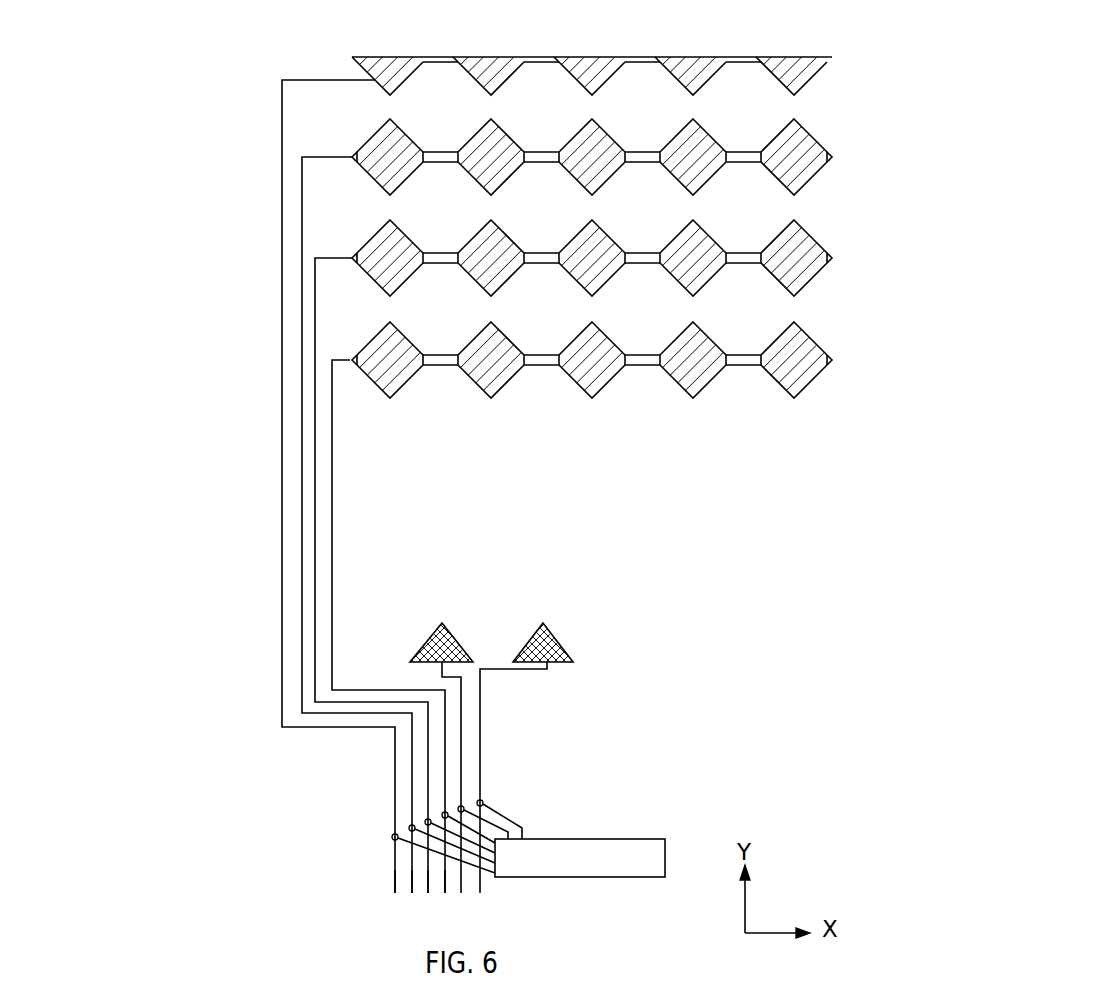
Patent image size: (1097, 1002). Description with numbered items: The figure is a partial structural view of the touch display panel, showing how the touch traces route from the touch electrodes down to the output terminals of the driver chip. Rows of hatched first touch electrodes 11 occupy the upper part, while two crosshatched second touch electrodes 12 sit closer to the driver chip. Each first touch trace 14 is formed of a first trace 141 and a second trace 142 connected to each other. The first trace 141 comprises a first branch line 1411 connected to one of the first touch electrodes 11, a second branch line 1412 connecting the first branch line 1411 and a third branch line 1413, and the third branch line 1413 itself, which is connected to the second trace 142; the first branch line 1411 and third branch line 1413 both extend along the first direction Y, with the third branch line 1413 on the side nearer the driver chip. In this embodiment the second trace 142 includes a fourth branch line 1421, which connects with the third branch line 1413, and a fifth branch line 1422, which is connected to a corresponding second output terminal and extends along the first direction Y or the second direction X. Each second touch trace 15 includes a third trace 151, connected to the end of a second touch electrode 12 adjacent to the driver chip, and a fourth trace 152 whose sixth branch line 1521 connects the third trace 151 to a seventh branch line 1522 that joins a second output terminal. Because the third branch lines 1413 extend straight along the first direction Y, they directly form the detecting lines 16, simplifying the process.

The first touch electrode 11 is at (680, 368).
The second touch electrode 12 is at (557, 640).
The first touch trace 14 is at (288, 497).
The first trace 141 is at (286, 486).
The first branch line 1411 is at (282, 690).
The second branch line 1412 is at (323, 729).
The third branch line 1413 is at (395, 787).
The second trace 142 is at (313, 863).
The fourth branch line 1421 is at (495, 858).
The fifth branch line 1422 is at (495, 870).
The second touch trace 15 is at (578, 777).
The third trace 151 is at (480, 717).
The fourth trace 152 is at (561, 801).
The sixth branch line 1521 is at (487, 807).
The seventh branch line 1522 is at (521, 828).
The detecting line 16 is at (482, 883).